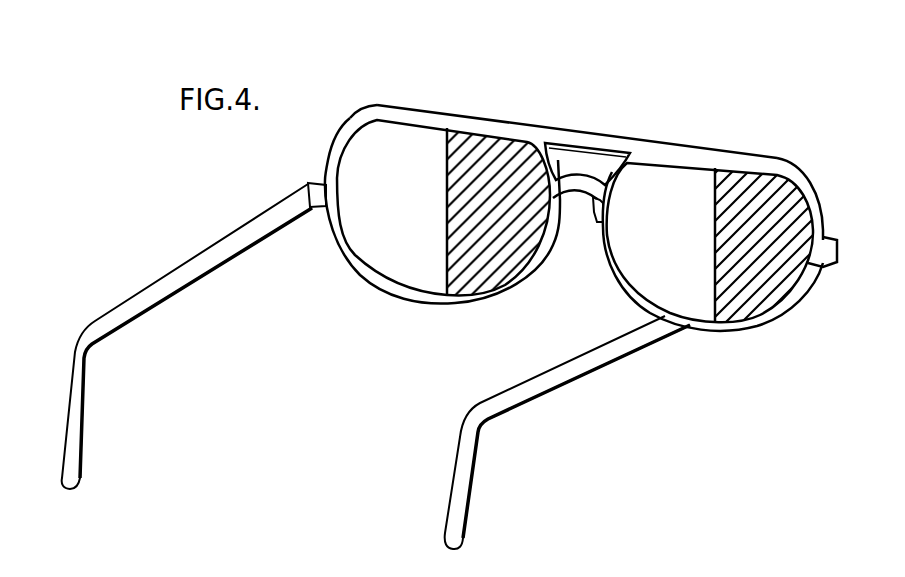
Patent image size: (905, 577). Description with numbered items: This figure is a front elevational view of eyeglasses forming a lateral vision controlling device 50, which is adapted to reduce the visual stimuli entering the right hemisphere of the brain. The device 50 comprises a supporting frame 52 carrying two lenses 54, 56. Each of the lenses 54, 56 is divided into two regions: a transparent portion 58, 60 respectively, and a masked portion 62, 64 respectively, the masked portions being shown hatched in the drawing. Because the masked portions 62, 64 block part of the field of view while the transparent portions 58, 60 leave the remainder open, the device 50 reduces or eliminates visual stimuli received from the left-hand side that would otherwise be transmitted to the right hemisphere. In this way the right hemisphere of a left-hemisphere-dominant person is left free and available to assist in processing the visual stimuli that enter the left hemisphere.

The lateral vision controlling device 50 is at (592, 108).
The supporting frame 52 is at (710, 150).
The lens 54 is at (440, 297).
The lens 56 is at (730, 327).
The transparent portion 58 is at (375, 250).
The transparent portion 60 is at (673, 293).
The masked portion 62 is at (500, 267).
The masked portion 64 is at (767, 285).